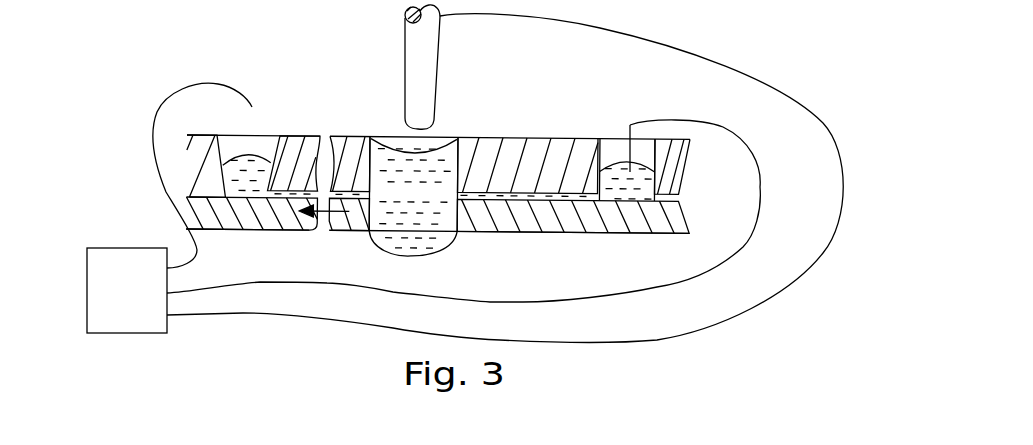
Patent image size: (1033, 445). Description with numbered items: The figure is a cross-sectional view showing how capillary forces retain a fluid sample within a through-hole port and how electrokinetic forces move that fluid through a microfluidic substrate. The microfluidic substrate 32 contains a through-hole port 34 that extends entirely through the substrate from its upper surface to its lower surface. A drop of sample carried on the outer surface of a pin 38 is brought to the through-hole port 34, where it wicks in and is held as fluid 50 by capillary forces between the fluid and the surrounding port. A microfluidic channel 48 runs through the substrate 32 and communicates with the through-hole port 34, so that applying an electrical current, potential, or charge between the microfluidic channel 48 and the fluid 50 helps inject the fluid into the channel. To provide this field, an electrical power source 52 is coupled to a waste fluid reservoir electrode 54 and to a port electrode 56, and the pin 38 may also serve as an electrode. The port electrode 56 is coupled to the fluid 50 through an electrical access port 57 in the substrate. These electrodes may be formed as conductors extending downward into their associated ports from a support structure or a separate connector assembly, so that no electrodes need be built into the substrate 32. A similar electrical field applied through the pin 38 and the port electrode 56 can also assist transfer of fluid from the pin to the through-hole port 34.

The microfluidic substrate 32 is at (297, 145).
The through-hole port 34 is at (440, 137).
The pin 38 is at (428, 82).
The microfluidic channel 48 is at (290, 192).
The fluid 50 is at (437, 233).
The electrical power source 52 is at (130, 248).
The waste fluid reservoir electrode 54 is at (249, 168).
The port electrode 56 is at (630, 125).
The electrical access port 57 is at (613, 147).